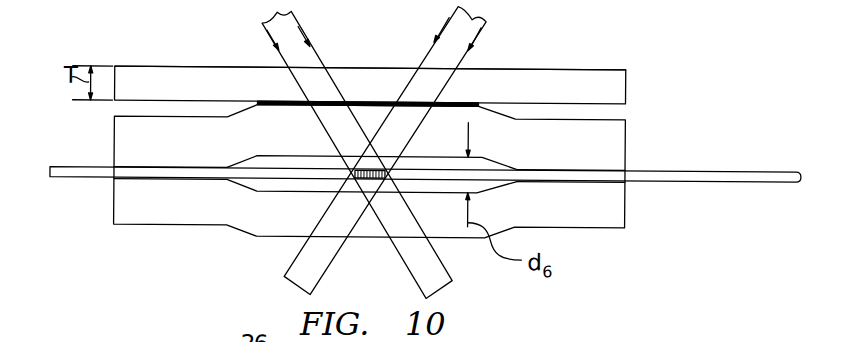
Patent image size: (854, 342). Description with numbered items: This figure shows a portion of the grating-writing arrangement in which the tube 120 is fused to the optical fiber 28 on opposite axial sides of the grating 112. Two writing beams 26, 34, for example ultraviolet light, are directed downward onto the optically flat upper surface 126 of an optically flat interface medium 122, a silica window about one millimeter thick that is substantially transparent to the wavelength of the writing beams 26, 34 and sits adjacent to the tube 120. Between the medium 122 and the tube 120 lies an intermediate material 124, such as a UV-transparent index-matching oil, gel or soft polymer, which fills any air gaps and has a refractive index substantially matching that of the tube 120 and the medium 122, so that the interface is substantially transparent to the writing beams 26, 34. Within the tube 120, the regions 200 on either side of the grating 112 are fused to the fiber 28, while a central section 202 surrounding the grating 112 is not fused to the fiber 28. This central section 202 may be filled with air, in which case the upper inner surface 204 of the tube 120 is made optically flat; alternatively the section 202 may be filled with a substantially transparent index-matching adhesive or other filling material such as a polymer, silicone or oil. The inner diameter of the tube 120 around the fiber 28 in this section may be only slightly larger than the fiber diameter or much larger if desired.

The writing beam 26 is at (269, 31).
The writing beam 34 is at (481, 28).
The optical fiber 28 is at (67, 163).
The grating 112 is at (369, 181).
The tube 120 is at (326, 165).
The optically flat interface medium 122 is at (417, 69).
The intermediate material 124 is at (263, 103).
The optically flat upper surface 126 is at (569, 68).
The regions 200 is at (163, 166).
The central section 202 is at (290, 164).
The upper inner surface 204 is at (499, 175).